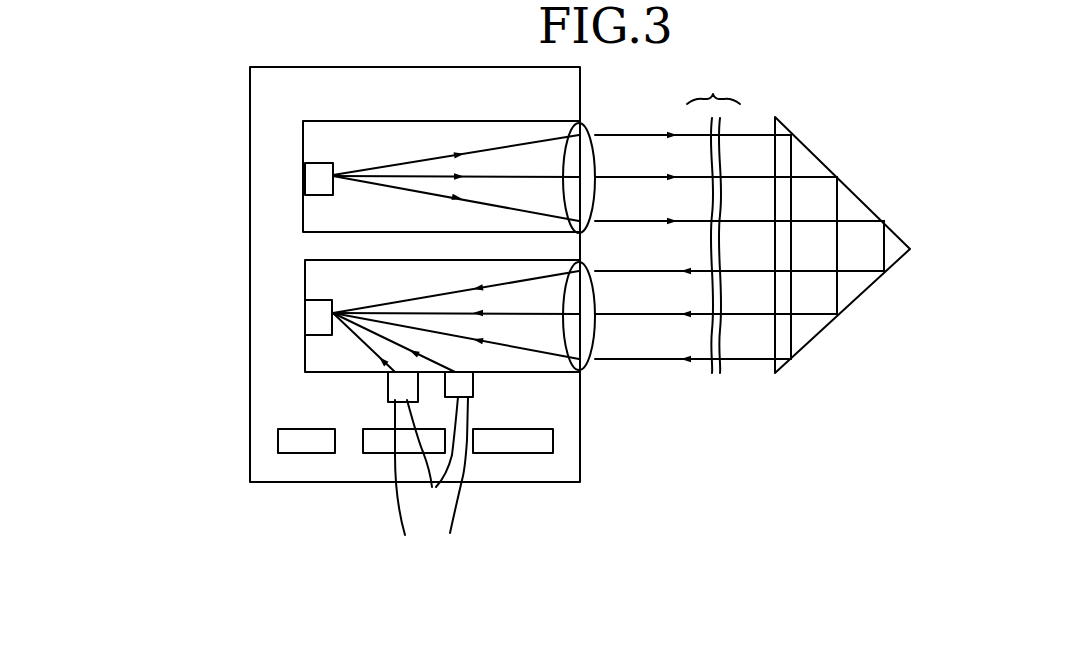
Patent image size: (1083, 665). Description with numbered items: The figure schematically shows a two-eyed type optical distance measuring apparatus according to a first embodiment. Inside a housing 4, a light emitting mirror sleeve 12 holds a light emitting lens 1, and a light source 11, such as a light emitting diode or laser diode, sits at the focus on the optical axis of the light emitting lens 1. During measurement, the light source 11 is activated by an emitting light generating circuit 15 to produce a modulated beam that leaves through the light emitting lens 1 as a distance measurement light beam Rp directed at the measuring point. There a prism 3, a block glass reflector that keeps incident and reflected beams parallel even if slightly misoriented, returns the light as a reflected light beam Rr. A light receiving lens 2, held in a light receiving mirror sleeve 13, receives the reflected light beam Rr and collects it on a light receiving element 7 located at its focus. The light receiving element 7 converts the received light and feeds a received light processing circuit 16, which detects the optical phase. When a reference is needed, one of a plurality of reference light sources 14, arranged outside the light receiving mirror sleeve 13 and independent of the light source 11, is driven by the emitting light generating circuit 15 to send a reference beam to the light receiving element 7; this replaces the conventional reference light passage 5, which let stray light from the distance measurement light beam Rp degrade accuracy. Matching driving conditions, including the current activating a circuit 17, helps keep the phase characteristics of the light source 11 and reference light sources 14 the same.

The light emitting lens 1 is at (583, 123).
The light receiving lens 2 is at (585, 370).
The prism 3 is at (818, 332).
The housing 4 is at (572, 475).
The reference light passage 5 is at (382, 336).
The light receiving element 7 is at (313, 330).
The light source 11 is at (308, 183).
The light emitting mirror sleeve 12 is at (502, 121).
The light receiving mirror sleeve 13 is at (555, 373).
The reference light sources 14 is at (454, 496).
The emitting light generating circuit 15 is at (305, 453).
The received light processing circuit 16 is at (517, 453).
The circuit 17 is at (380, 453).
The distance measurement light beam Rp is at (640, 135).
The reflected light beam Rr is at (675, 360).